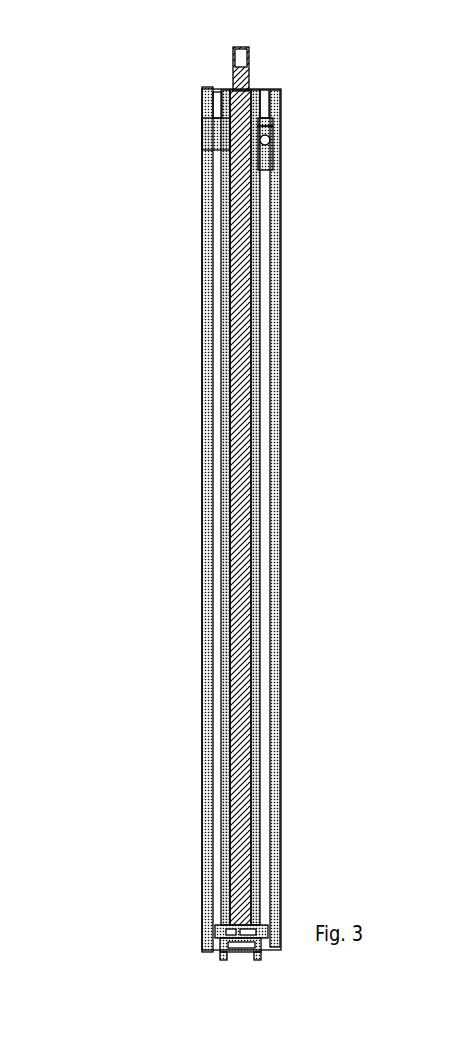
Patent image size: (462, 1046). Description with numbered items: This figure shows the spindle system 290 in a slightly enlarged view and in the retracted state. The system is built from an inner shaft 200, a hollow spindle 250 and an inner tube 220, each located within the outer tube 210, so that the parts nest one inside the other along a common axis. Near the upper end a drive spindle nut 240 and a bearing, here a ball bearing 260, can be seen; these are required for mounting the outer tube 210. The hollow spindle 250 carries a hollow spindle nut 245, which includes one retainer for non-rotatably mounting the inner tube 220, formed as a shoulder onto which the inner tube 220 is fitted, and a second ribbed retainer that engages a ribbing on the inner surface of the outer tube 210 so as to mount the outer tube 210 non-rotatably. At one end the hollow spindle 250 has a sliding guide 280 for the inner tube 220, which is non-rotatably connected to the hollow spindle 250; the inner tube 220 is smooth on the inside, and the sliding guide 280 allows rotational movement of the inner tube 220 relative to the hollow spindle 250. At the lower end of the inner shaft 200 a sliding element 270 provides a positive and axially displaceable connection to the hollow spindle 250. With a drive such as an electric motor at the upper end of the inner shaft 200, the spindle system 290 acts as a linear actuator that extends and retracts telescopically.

The inner shaft 200 is at (220, 67).
The outer tube 210 is at (193, 217).
The inner tube 220 is at (200, 286).
The drive spindle nut 240 is at (274, 77).
The hollow spindle nut 245 is at (272, 165).
The hollow spindle 250 is at (216, 320).
The ball bearing 260 is at (200, 144).
The sliding element 270 is at (226, 901).
The sliding guide 280 is at (204, 932).
The spindle system 290 is at (193, 447).